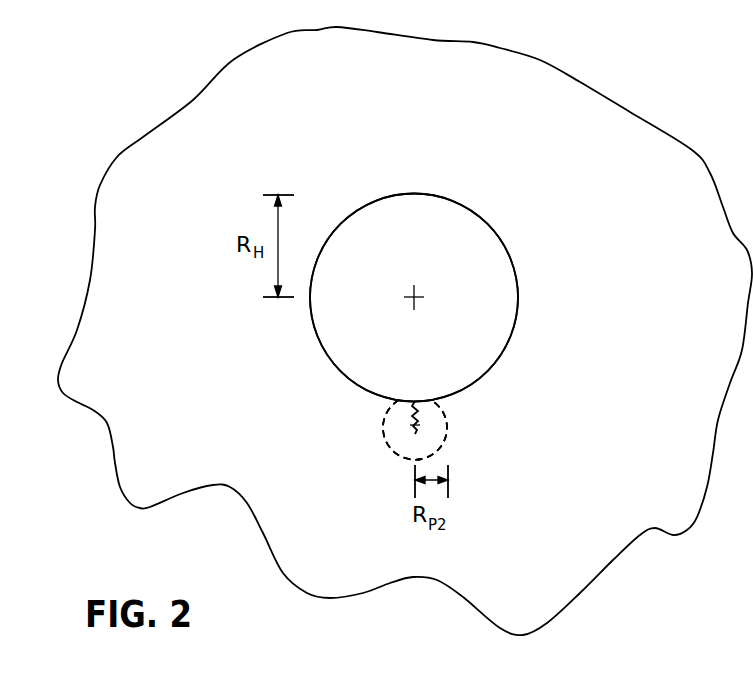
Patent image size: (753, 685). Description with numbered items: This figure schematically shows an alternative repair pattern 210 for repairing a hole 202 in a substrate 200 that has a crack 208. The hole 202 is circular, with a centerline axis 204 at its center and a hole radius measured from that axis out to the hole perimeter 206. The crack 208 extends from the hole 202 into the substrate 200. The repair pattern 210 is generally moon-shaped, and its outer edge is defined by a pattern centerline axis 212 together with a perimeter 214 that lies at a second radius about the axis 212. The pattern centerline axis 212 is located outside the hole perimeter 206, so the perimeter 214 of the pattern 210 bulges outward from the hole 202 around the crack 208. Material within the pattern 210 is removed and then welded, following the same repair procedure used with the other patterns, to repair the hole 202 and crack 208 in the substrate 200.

The substrate 200 is at (625, 128).
The hole 202 is at (518, 297).
The centerline axis 204 is at (418, 295).
The hole perimeter 206 is at (502, 243).
The crack 208 is at (412, 433).
The repair pattern 210 is at (445, 437).
The pattern centerline axis 212 is at (410, 423).
The perimeter 214 is at (447, 418).